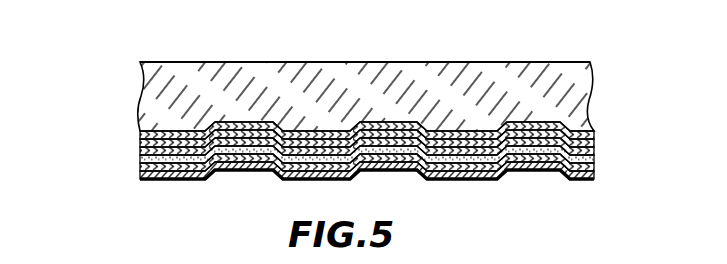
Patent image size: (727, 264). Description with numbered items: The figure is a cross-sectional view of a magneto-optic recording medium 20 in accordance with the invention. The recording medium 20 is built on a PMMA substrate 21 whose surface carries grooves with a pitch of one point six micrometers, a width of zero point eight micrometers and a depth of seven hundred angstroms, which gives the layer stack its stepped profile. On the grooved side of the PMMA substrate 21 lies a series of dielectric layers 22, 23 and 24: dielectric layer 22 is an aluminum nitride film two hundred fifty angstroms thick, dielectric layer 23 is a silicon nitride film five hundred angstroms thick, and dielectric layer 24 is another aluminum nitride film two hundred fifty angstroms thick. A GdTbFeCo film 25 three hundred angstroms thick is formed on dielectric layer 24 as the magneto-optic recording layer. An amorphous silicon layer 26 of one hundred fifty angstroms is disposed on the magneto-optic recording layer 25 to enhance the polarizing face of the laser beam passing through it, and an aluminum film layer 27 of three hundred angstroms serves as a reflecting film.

The magneto-optic recording medium 20 is at (354, 159).
The PMMA substrate 21 is at (582, 84).
The dielectric layer 22 is at (590, 133).
The dielectric layer 23 is at (592, 142).
The dielectric layer 24 is at (592, 150).
The GdTbFeCo film 25 is at (595, 158).
The amorphous silicon layer 26 is at (596, 164).
The aluminum film layer 27 is at (597, 168).